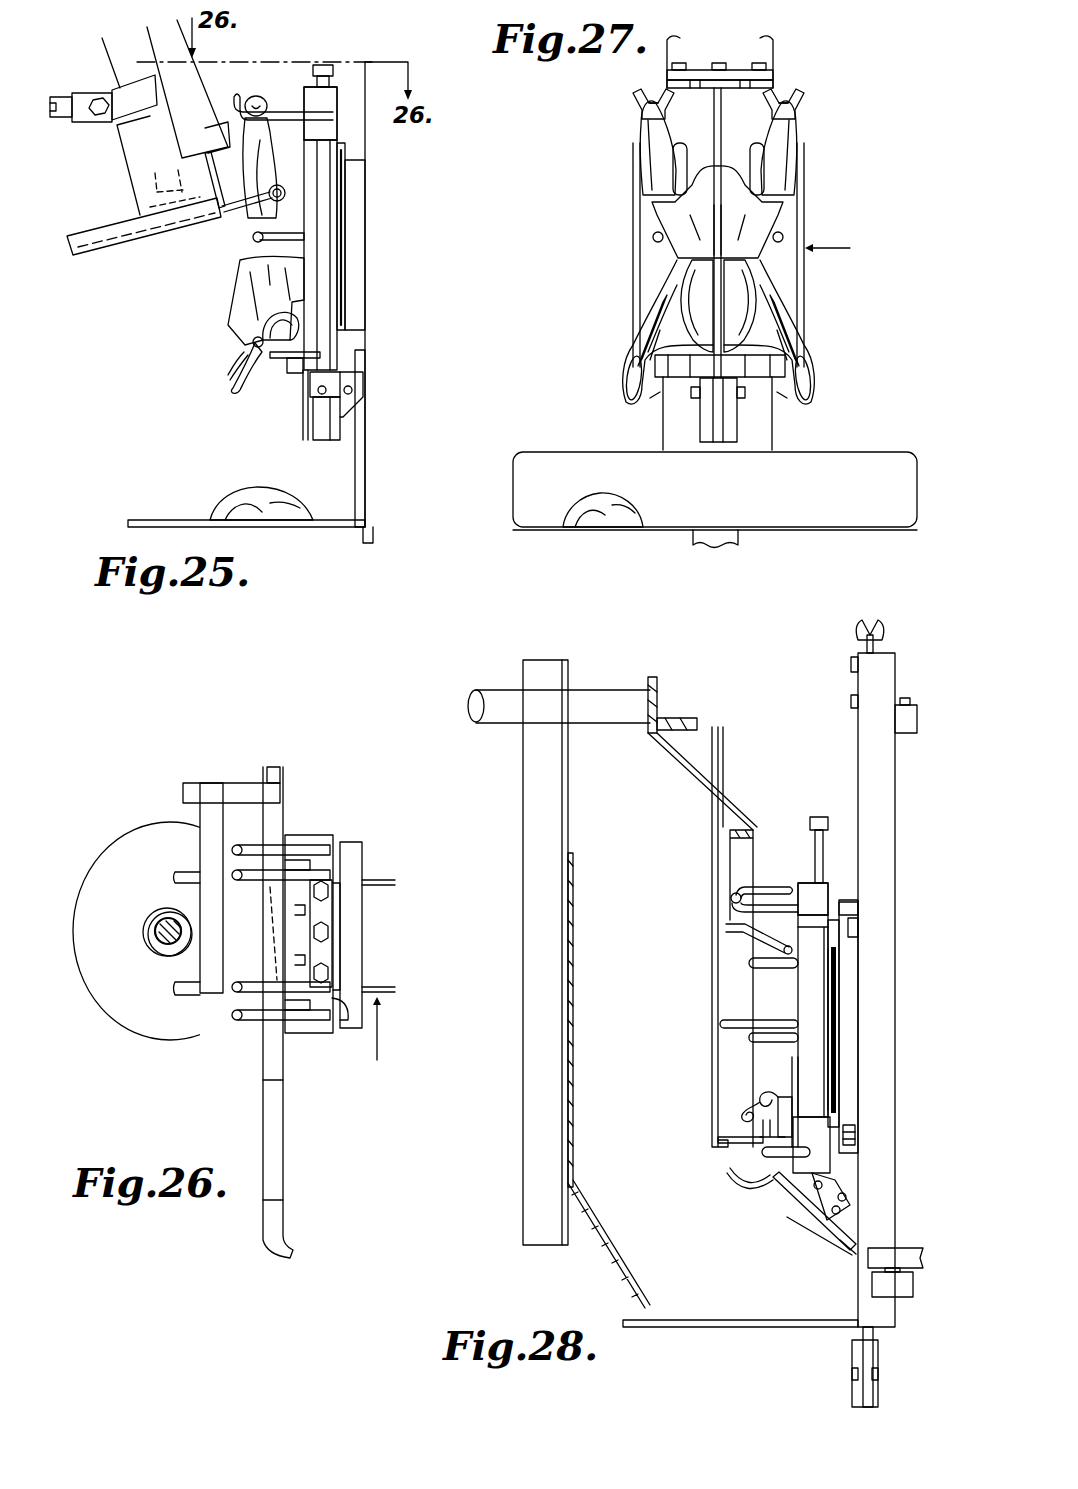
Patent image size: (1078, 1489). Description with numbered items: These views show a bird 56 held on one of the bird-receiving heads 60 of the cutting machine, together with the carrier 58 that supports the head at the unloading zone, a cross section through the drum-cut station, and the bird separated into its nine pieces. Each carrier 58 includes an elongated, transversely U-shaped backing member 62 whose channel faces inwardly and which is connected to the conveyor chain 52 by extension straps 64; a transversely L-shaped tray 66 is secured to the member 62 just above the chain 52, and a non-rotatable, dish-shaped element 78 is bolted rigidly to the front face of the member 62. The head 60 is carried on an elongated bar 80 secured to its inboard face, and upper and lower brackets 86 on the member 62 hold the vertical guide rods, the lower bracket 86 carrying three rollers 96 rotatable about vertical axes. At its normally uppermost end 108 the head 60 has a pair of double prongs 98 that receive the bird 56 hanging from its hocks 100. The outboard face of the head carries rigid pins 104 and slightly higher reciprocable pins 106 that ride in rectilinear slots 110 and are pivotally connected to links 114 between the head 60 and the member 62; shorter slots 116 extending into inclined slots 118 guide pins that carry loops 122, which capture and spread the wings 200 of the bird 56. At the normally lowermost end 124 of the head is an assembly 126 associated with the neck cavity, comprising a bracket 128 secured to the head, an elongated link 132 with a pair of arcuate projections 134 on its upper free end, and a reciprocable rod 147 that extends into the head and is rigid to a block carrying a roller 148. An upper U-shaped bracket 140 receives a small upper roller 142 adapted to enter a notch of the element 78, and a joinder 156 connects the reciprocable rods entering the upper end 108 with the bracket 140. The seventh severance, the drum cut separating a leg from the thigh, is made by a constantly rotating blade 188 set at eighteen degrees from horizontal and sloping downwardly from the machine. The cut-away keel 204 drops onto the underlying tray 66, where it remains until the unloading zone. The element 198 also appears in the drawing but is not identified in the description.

In FIG. 28, the chain 52 is at (852, 1372).
In FIG. 25, the bird 56 is at (232, 279).
In FIG. 27, the bird 56 is at (795, 207).
In FIG. 25, the carrier 58 is at (390, 520).
In FIG. 27, the carrier 58 is at (786, 36).
In FIG. 26, the carrier 58 is at (402, 878).
In FIG. 28, the carrier 58 is at (900, 788).
In FIG. 25, the bird-receiving head 60 is at (348, 117).
In FIG. 27, the bird-receiving head 60 is at (812, 170).
In FIG. 26, the bird-receiving head 60 is at (285, 943).
In FIG. 28, the bird-receiving head 60 is at (788, 992).
In FIG. 27, the backing member 62 is at (772, 433).
In FIG. 26, the backing member 62 is at (363, 978).
In FIG. 28, the backing member 62 is at (868, 717).
In FIG. 27, the extension strap 64 is at (700, 540).
In FIG. 28, the extension strap 64 is at (860, 635).
In FIG. 25, the tray 66 is at (150, 520).
In FIG. 27, the tray 66 is at (793, 530).
In FIG. 28, the tray 66 is at (703, 1327).
In FIG. 25, the dish-shaped element 78 is at (358, 257).
In FIG. 26, the dish-shaped element 78 is at (358, 842).
In FIG. 28, the dish-shaped element 78 is at (852, 1053).
In FIG. 25, the elongated bar 80 is at (339, 182).
In FIG. 26, the elongated bar 80 is at (337, 935).
In FIG. 28, the elongated bar 80 is at (837, 1090).
In FIG. 28, the bracket 86 is at (920, 720).
In FIG. 28, the roller 96 is at (913, 1290).
In FIG. 25, the double prong 98 is at (235, 97).
In FIG. 27, the double prong 98 is at (640, 113).
In FIG. 26, the double prong 98 is at (240, 848).
In FIG. 28, the double prong 98 is at (733, 900).
In FIG. 25, the hock 100 is at (257, 100).
In FIG. 27, the hock 100 is at (646, 93).
In FIG. 25, the rigid pin 104 is at (255, 236).
In FIG. 27, the rigid pin 104 is at (653, 237).
In FIG. 28, the rigid pin 104 is at (749, 1037).
In FIG. 28, the reciprocable pin 106 is at (749, 962).
In FIG. 25, the uppermost end 108 is at (306, 85).
In FIG. 27, the uppermost end 108 is at (695, 70).
In FIG. 26, the uppermost end 108 is at (280, 913).
In FIG. 28, the uppermost end 108 is at (805, 883).
In FIG. 27, the rectilinear slot 110 is at (722, 160).
In FIG. 26, the link 114 is at (347, 1020).
In FIG. 28, the link 114 is at (840, 1013).
In FIG. 27, the slot 116 is at (680, 278).
In FIG. 27, the inclined slot 118 is at (645, 312).
In FIG. 25, the loop 122 is at (240, 347).
In FIG. 27, the loop 122 is at (625, 350).
In FIG. 28, the loop 122 is at (740, 1100).
In FIG. 27, the lowermost end 124 is at (650, 400).
In FIG. 25, the assembly 126 is at (296, 421).
In FIG. 27, the assembly 126 is at (698, 455).
In FIG. 28, the assembly 126 is at (814, 1258).
In FIG. 28, the bracket 128 is at (830, 1165).
In FIG. 28, the elongated link 132 is at (812, 1225).
In FIG. 28, the arcuate projection 134 is at (730, 1178).
In FIG. 28, the U-shaped bracket 140 is at (858, 905).
In FIG. 28, the upper roller 142 is at (858, 928).
In FIG. 28, the reciprocable rod 147 is at (803, 1197).
In FIG. 28, the lower roller 148 is at (855, 1137).
In FIG. 25, the joinder 156 is at (333, 70).
In FIG. 27, the joinder 156 is at (748, 63).
In FIG. 26, the joinder 156 is at (322, 953).
In FIG. 28, the joinder 156 is at (828, 822).
In FIG. 25, the blade 188 is at (217, 222).
In FIG. 26, the blade 188 is at (103, 997).
In FIG. 25, the drumstick 198 is at (261, 138).
In FIG. 27, the drumstick 198 is at (645, 173).
In FIG. 25, the wing 200 is at (240, 398).
In FIG. 27, the wing 200 is at (625, 378).
In FIG. 25, the keel 204 is at (227, 487).
In FIG. 27, the keel 204 is at (605, 495).